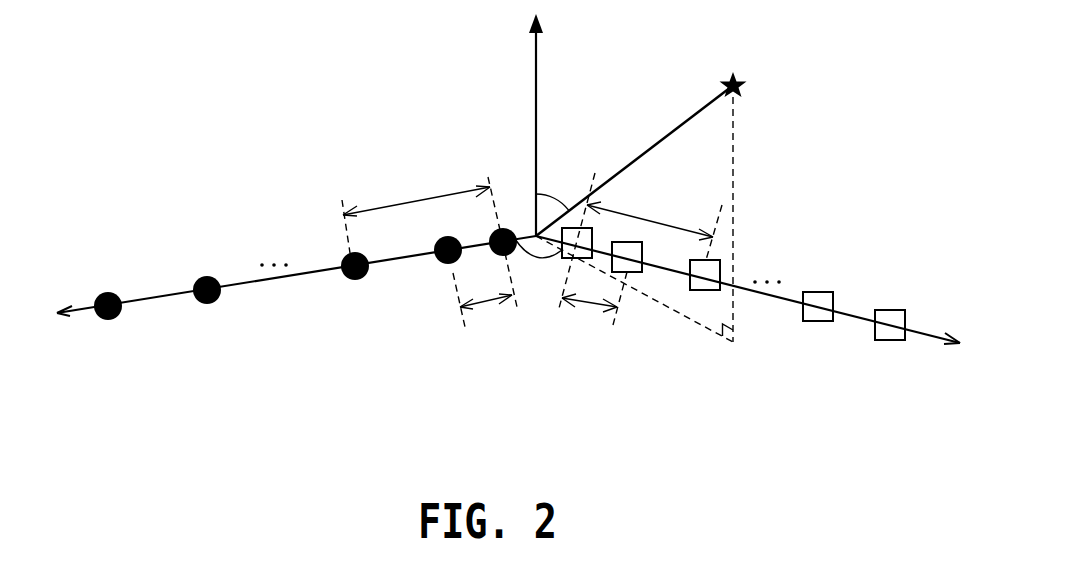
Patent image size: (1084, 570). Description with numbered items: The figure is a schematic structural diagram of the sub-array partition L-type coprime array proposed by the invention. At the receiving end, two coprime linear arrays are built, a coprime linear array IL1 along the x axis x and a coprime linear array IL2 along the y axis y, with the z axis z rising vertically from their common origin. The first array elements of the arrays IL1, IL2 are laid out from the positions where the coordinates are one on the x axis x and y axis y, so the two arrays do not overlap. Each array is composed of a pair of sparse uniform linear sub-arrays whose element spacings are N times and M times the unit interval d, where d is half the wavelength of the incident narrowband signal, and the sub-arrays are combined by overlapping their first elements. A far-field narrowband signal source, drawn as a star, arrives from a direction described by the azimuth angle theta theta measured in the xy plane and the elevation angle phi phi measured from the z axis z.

The coprime linear array IL1 is at (285, 195).
The coprime linear array IL2 is at (53, 90).
The x axis x is at (290, 276).
The y axis y is at (748, 290).
The z axis z is at (523, 121).
The elevation angle phi is at (555, 185).
The azimuth angle theta is at (538, 268).
The unit interval d is at (532, 255).